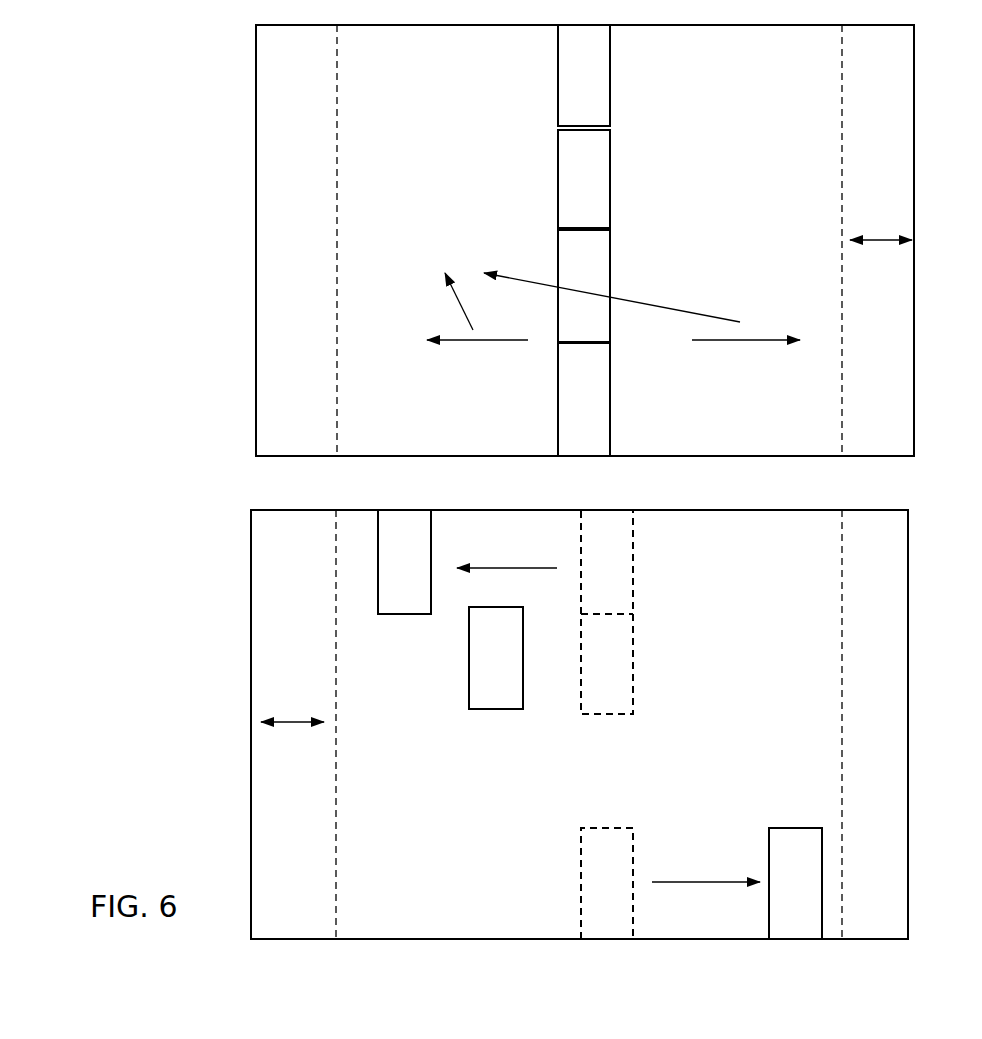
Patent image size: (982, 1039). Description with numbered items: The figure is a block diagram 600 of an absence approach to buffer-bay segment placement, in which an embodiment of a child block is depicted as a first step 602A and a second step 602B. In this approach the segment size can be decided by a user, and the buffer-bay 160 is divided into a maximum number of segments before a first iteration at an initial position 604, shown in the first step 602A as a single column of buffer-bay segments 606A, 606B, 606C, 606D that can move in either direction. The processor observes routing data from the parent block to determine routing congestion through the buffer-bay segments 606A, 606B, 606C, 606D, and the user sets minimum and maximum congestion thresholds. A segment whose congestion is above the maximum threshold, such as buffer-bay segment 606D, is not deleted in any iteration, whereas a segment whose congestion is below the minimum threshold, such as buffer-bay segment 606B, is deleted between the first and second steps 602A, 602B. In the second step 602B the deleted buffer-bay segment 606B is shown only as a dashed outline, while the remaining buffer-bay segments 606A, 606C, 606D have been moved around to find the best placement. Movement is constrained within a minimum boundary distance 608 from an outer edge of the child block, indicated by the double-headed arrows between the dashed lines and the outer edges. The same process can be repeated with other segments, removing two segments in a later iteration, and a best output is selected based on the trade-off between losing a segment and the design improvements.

The block diagram 600 is at (96, 92).
The first step 602A is at (257, 130).
The second step 602B is at (251, 745).
The initial position 604 is at (589, 258).
The buffer-bay segment 606A is at (612, 400).
The buffer-bay segment 606B is at (612, 275).
The buffer-bay segment 606C is at (558, 140).
The buffer-bay segment 606D is at (612, 58).
The minimum boundary distance 608 is at (888, 221).
The buffer-bay 160 is at (602, 457).